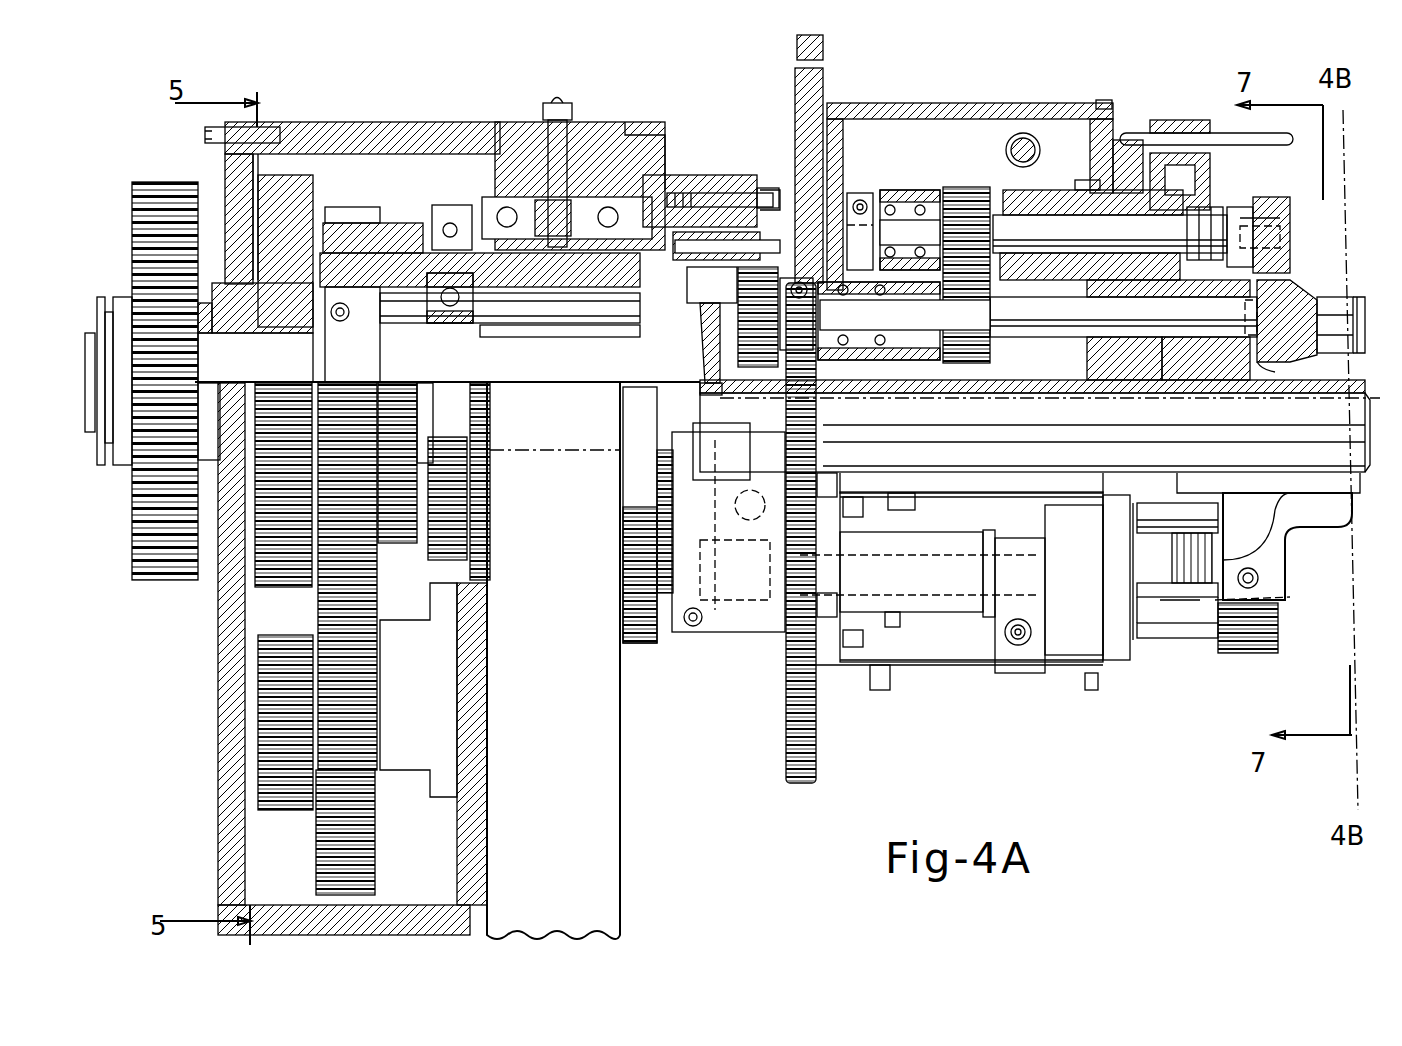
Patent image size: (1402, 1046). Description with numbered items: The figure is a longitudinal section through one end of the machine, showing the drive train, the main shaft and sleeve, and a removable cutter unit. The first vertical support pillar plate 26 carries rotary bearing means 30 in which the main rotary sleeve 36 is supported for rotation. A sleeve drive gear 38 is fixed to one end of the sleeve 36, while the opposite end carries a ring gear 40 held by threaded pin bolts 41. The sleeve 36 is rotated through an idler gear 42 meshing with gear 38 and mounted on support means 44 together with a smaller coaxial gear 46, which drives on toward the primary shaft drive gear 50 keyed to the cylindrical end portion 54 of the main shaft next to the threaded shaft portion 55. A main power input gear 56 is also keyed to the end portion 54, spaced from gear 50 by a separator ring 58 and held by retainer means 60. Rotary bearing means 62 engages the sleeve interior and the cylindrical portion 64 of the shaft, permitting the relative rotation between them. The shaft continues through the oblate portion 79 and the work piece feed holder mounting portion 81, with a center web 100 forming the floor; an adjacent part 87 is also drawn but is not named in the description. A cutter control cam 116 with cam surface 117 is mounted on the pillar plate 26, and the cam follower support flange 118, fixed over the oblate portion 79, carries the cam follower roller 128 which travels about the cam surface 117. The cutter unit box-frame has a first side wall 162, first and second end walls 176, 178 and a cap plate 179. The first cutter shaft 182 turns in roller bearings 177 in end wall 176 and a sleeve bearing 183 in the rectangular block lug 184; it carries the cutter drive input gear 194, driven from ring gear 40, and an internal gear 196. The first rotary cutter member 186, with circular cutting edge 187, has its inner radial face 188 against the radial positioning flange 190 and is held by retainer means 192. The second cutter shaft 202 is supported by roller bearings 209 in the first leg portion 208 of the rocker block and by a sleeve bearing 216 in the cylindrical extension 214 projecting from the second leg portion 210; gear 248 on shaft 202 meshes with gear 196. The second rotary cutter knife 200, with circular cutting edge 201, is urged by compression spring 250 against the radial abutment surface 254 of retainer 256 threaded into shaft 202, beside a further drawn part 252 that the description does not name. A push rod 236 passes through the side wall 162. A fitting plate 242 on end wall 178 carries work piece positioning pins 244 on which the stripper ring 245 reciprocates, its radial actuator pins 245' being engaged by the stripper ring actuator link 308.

The first vertical support pillar plate 26 is at (520, 130).
The main power input gear 56 is at (165, 182).
The retainer means 60 is at (98, 465).
The primary shaft drive gear 50 is at (290, 190).
The sleeve drive gear 38 is at (352, 222).
The rotary bearing means 30 is at (452, 205).
The threaded pin bolts 41 is at (725, 193).
The cam surface 117 is at (750, 200).
The cutter control cam 116 is at (765, 215).
The ring gear 40 is at (712, 285).
The wall 87 is at (700, 345).
The oblate portion 79 is at (715, 395).
The cutter drive input gear 194 is at (765, 362).
The cam follower support flange 118 is at (795, 95).
The cap plate 179 is at (962, 110).
The first end wall 176 is at (843, 130).
The push rod 236 is at (1023, 140).
The second end wall 178 is at (1098, 120).
The fitting plate 242 is at (1125, 130).
The stripper ring 245 is at (1214, 390).
The work piece positioning pins 244 is at (1280, 125).
The block 252 is at (1180, 181).
The second leg portion 210 is at (1045, 192).
The cylindrical extension 214 is at (1090, 188).
The gear 248 is at (965, 187).
The first leg portion 208 is at (928, 190).
The roller bearings 209 is at (865, 195).
The second cutter shaft 202 is at (1088, 239).
The sleeve bearing 216 is at (1135, 215).
The compression spring 250 is at (1218, 207).
The second rotary cutter knife 200 is at (1250, 207).
The circular cutting edge 201 is at (1290, 200).
The radial abutment surface 254 is at (1285, 217).
The retainer 256 is at (1280, 240).
The circular cutting edge 187 is at (1300, 280).
The inner radial face 188 is at (1275, 372).
The retainer means 192 is at (1353, 330).
The first rotary cutter member 186 is at (1358, 350).
The gear 196 is at (1087, 283).
The first cutter shaft 182 is at (1073, 316).
The radial positioning flange 190 is at (1255, 308).
The sleeve bearing 183 is at (1175, 375).
The rectangular block lug 184 is at (1222, 380).
The roller bearings 177 is at (885, 355).
The center web 100 is at (1045, 393).
The work piece feed holder mounting portion 81 is at (815, 410).
The cam follower roller 128 is at (700, 430).
The first side wall 162 is at (1053, 522).
The stripper ring actuator link 308 is at (1265, 552).
The radial actuator pins 245' is at (1292, 578).
The separator ring 58 is at (255, 308).
The cylindrical end portion 54 is at (258, 372).
The threaded shaft portion 55 is at (380, 355).
The rotary bearing means 62 is at (470, 333).
The cylindrical portion 64 is at (520, 323).
The main rotary sleeve 36 is at (590, 323).
The support means 44 is at (405, 760).
The smaller coaxial gear 46 is at (280, 810).
The idler gear 42 is at (375, 870).